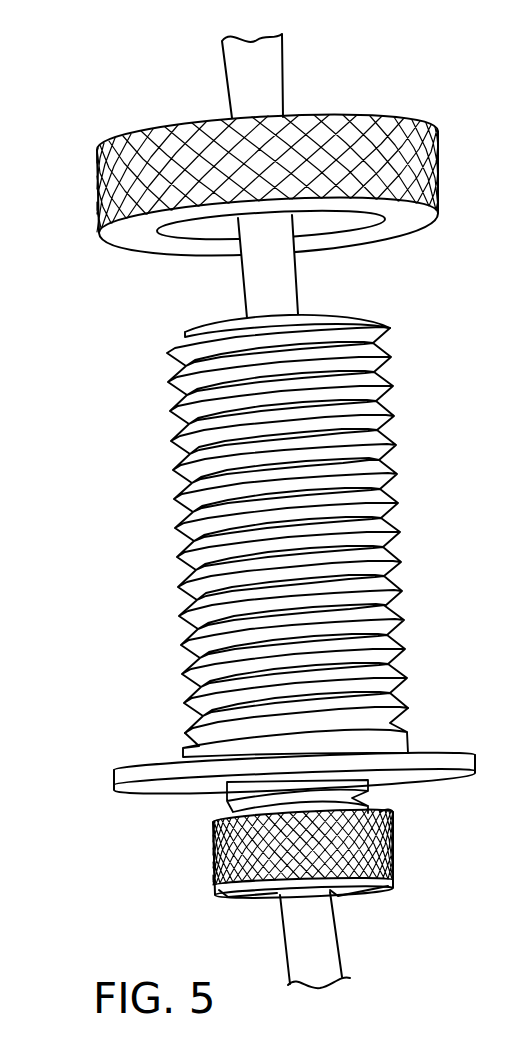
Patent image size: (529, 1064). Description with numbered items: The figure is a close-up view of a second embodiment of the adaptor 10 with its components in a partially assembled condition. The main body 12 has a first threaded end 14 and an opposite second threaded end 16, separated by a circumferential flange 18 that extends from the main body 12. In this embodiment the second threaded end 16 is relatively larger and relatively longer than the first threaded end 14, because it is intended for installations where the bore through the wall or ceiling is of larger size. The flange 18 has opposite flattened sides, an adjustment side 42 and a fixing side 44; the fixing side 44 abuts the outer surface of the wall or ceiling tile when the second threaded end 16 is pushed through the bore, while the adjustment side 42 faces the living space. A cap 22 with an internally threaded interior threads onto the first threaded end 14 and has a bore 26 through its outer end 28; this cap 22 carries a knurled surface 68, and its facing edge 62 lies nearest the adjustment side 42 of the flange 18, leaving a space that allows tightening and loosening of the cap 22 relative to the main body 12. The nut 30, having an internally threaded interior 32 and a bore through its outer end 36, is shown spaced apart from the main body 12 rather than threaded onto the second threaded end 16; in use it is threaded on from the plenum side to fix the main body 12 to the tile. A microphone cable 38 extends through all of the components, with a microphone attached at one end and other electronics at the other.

The adaptor 10 is at (88, 90).
The main body 12 is at (415, 527).
The first threaded end 14 is at (237, 812).
The second threaded end 16 is at (190, 557).
The circumferential flange 18 is at (118, 780).
The cap 22 is at (393, 857).
The bore 26 is at (335, 894).
The outer end 28 is at (230, 896).
The nut 30 is at (427, 173).
The internally threaded interior 32 is at (355, 225).
The outer end 36 is at (377, 117).
The microphone cable 38 is at (320, 937).
The adjustment side 42 is at (455, 775).
The fixing side 44 is at (453, 756).
The facing edge 62 is at (378, 807).
The knurled surface 68 is at (240, 855).